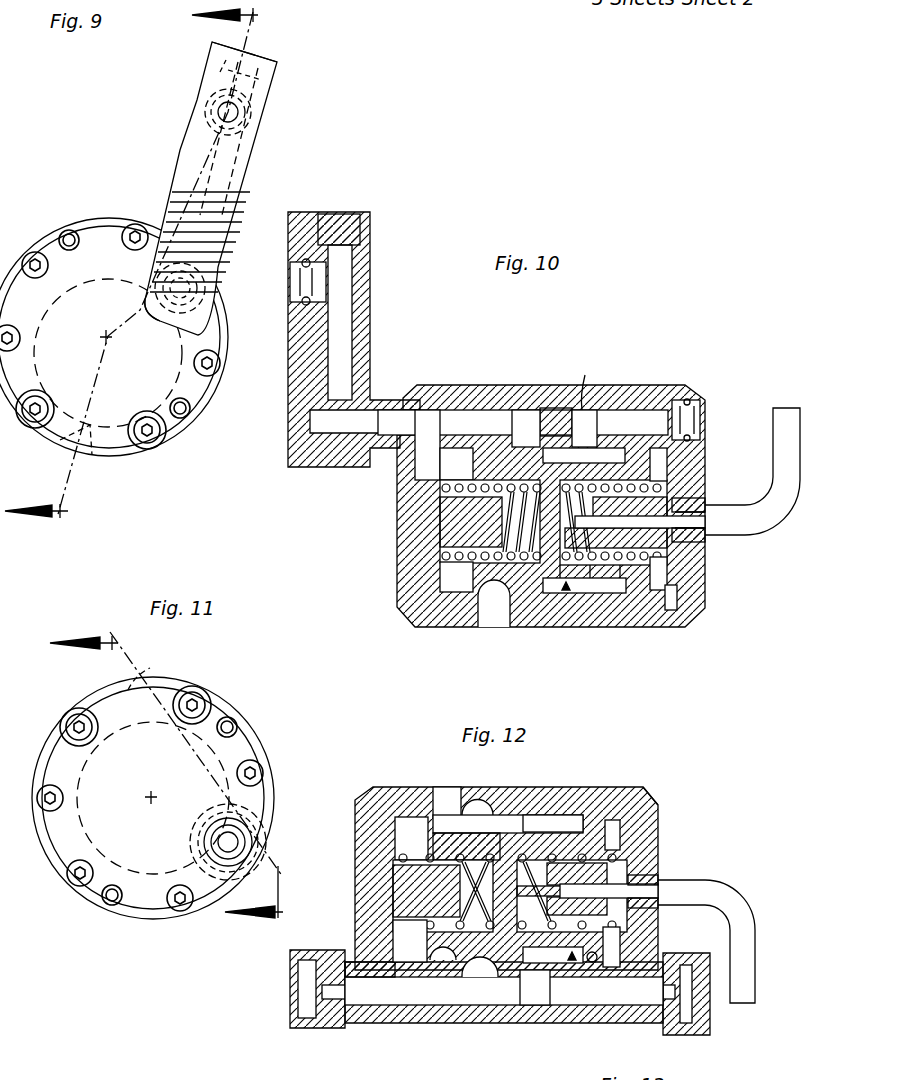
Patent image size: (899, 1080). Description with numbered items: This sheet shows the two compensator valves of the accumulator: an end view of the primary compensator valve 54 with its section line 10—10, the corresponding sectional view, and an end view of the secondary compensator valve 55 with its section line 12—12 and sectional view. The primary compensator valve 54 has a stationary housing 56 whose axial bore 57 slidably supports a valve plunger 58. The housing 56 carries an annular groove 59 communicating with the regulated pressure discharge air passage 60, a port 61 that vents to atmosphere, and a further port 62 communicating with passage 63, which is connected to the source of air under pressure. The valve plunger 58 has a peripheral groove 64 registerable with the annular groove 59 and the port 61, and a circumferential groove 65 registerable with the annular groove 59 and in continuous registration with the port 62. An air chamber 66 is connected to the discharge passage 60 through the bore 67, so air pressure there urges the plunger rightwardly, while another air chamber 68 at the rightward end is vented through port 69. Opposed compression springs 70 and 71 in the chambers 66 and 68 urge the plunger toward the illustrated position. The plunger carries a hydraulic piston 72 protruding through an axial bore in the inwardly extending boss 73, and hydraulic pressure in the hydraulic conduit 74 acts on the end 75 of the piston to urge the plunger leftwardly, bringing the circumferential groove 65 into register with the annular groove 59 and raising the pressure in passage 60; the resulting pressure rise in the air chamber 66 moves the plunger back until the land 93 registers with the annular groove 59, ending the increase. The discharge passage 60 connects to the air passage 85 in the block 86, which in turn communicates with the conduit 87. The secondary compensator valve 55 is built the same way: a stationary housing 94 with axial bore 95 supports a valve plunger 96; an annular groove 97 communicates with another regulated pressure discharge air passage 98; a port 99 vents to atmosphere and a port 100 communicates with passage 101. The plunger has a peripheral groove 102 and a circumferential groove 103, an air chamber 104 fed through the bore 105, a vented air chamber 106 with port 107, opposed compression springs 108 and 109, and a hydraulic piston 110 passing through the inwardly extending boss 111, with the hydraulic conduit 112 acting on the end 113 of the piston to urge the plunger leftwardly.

In FIG. 9, the section line 10— 10 is at (145, 266).
In FIG. 11, the section line 12— 12 is at (181, 778).
In FIG. 9, the primary compensator valve 54 is at (62, 216).
In FIG. 11, the secondary compensator valve 55 is at (262, 746).
In FIG. 12, the secondary compensator valve 55 is at (660, 816).
In FIG. 9, the stationary housing 56 is at (114, 337).
In FIG. 10, the stationary housing 56 is at (466, 385).
In FIG. 10, the axial bore 57 is at (556, 440).
In FIG. 10, the valve plunger 58 is at (598, 630).
In FIG. 10, the annular groove 59 is at (550, 595).
In FIG. 9, the regulated pressure discharge air passage 60 is at (195, 282).
In FIG. 10, the regulated pressure discharge air passage 60 is at (460, 400).
In FIG. 9, the port 61 is at (90, 458).
In FIG. 10, the port 61 is at (494, 615).
In FIG. 10, the port 62 is at (592, 383).
In FIG. 10, the passage 63 is at (670, 394).
In FIG. 10, the peripheral groove 64 is at (486, 420).
In FIG. 10, the circumferential groove 65 is at (620, 630).
In FIG. 10, the air chamber 66 is at (440, 470).
In FIG. 10, the bore 67 is at (415, 470).
In FIG. 10, the air chamber 68 is at (667, 465).
In FIG. 10, the port 69 is at (705, 600).
In FIG. 10, the compression spring 70 is at (440, 572).
In FIG. 10, the compression spring 71 is at (590, 600).
In FIG. 10, the hydraulic piston 72 is at (690, 500).
In FIG. 10, the inwardly extending boss 73 is at (667, 570).
In FIG. 10, the hydraulic conduit 74 is at (776, 410).
In FIG. 10, the end of hydraulic piston 75 is at (705, 532).
In FIG. 9, the air passage 85 is at (262, 152).
In FIG. 10, the air passage 85 is at (344, 318).
In FIG. 9, the block 86 is at (268, 80).
In FIG. 10, the block 86 is at (290, 378).
In FIG. 9, the conduit 87 is at (240, 114).
In FIG. 10, the land 93 is at (556, 600).
In FIG. 12, the stationary housing 94 is at (515, 830).
In FIG. 12, the axial bore 95 is at (560, 815).
In FIG. 12, the valve plunger 96 is at (585, 1005).
In FIG. 12, the annular groove 97 is at (478, 815).
In FIG. 12, the regulated pressure discharge air passage 98 is at (450, 1005).
In FIG. 11, the port 99 is at (152, 668).
In FIG. 12, the port 99 is at (446, 797).
In FIG. 12, the port 100 is at (540, 1008).
In FIG. 11, the passage 101 is at (256, 822).
In FIG. 12, the passage 101 is at (625, 1005).
In FIG. 12, the peripheral groove 102 is at (390, 1010).
In FIG. 12, the circumferential groove 103 is at (585, 815).
In FIG. 12, the air chamber 104 is at (400, 935).
In FIG. 12, the bore 105 is at (352, 1010).
In FIG. 12, the air chamber 106 is at (625, 840).
In FIG. 12, the port 107 is at (640, 790).
In FIG. 12, the compression spring 108 is at (393, 858).
In FIG. 12, the compression spring 109 is at (495, 1006).
In FIG. 12, the hydraulic piston 110 is at (610, 890).
In FIG. 12, the inwardly extending boss 111 is at (600, 910).
In FIG. 12, the hydraulic conduit 112 is at (742, 905).
In FIG. 12, the end of piston 113 is at (655, 876).